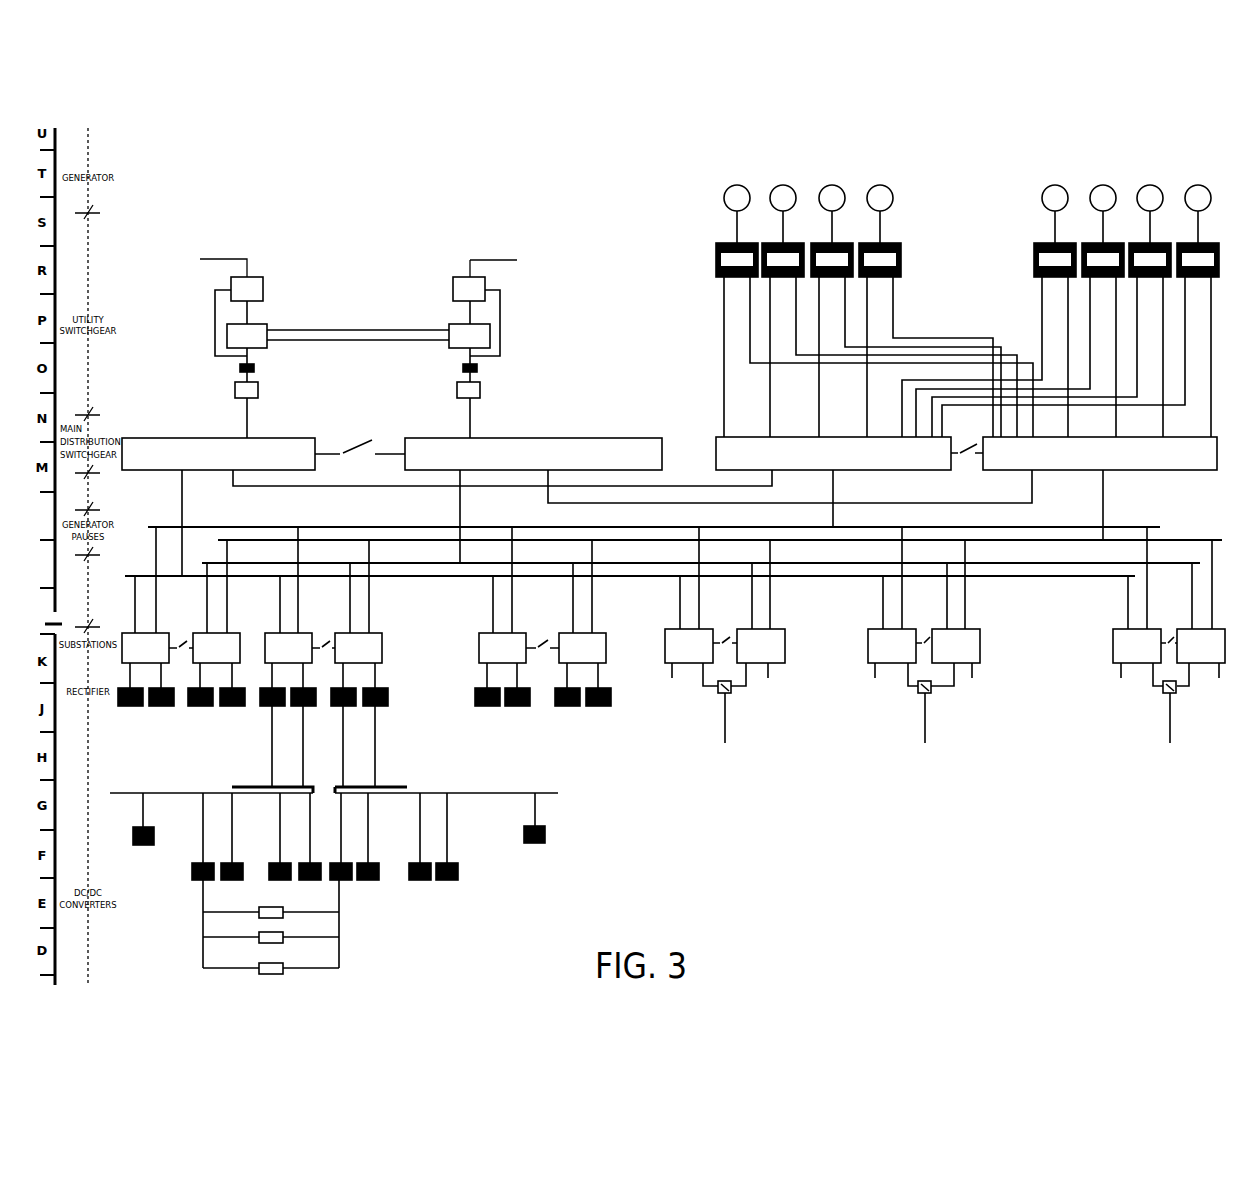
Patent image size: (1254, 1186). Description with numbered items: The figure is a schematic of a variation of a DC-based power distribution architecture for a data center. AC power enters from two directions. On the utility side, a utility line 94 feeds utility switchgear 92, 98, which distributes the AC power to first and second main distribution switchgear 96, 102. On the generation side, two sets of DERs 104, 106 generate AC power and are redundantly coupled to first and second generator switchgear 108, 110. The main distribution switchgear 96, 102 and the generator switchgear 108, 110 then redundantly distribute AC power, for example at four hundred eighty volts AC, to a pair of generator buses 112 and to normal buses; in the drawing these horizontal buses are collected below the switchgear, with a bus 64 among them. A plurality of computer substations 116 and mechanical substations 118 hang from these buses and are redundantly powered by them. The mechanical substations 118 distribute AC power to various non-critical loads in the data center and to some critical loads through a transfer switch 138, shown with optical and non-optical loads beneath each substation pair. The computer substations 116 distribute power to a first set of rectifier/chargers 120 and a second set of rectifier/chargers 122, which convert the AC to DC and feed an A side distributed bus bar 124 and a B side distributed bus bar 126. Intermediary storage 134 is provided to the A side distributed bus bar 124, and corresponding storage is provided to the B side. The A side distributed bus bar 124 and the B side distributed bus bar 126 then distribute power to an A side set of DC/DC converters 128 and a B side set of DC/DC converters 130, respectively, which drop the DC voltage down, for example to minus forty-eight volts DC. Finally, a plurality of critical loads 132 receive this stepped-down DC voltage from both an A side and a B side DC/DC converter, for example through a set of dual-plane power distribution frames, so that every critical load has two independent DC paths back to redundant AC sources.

The utility switchgear 92 is at (200, 352).
The utility line 94 is at (230, 248).
The first main distribution switchgear 96 is at (283, 433).
The utility switchgear 98 is at (527, 347).
The second main distribution switchgear 102 is at (548, 433).
The set of DERs 104 is at (700, 236).
The set of DERs 106 is at (1013, 232).
The first generator switchgear 108 is at (885, 472).
The second generator switchgear 110 is at (1155, 472).
The generator buses 112 is at (1215, 538).
The power distribution bus 64 is at (1005, 577).
The computer substations 116 is at (458, 642).
The mechanical substations 118 is at (852, 652).
The first set of rectifier/chargers 120 is at (266, 712).
The second set of rectifier/chargers 122 is at (382, 712).
The A side distributed bus bar 124 is at (213, 790).
The B side distributed bus bar 126 is at (483, 790).
The A side set of DC/DC converters 128 is at (263, 930).
The B side set of DC/DC converters 130 is at (404, 887).
The critical loads 132 is at (312, 956).
The intermediary storage 134 is at (143, 845).
The transfer switch 138 is at (706, 698).